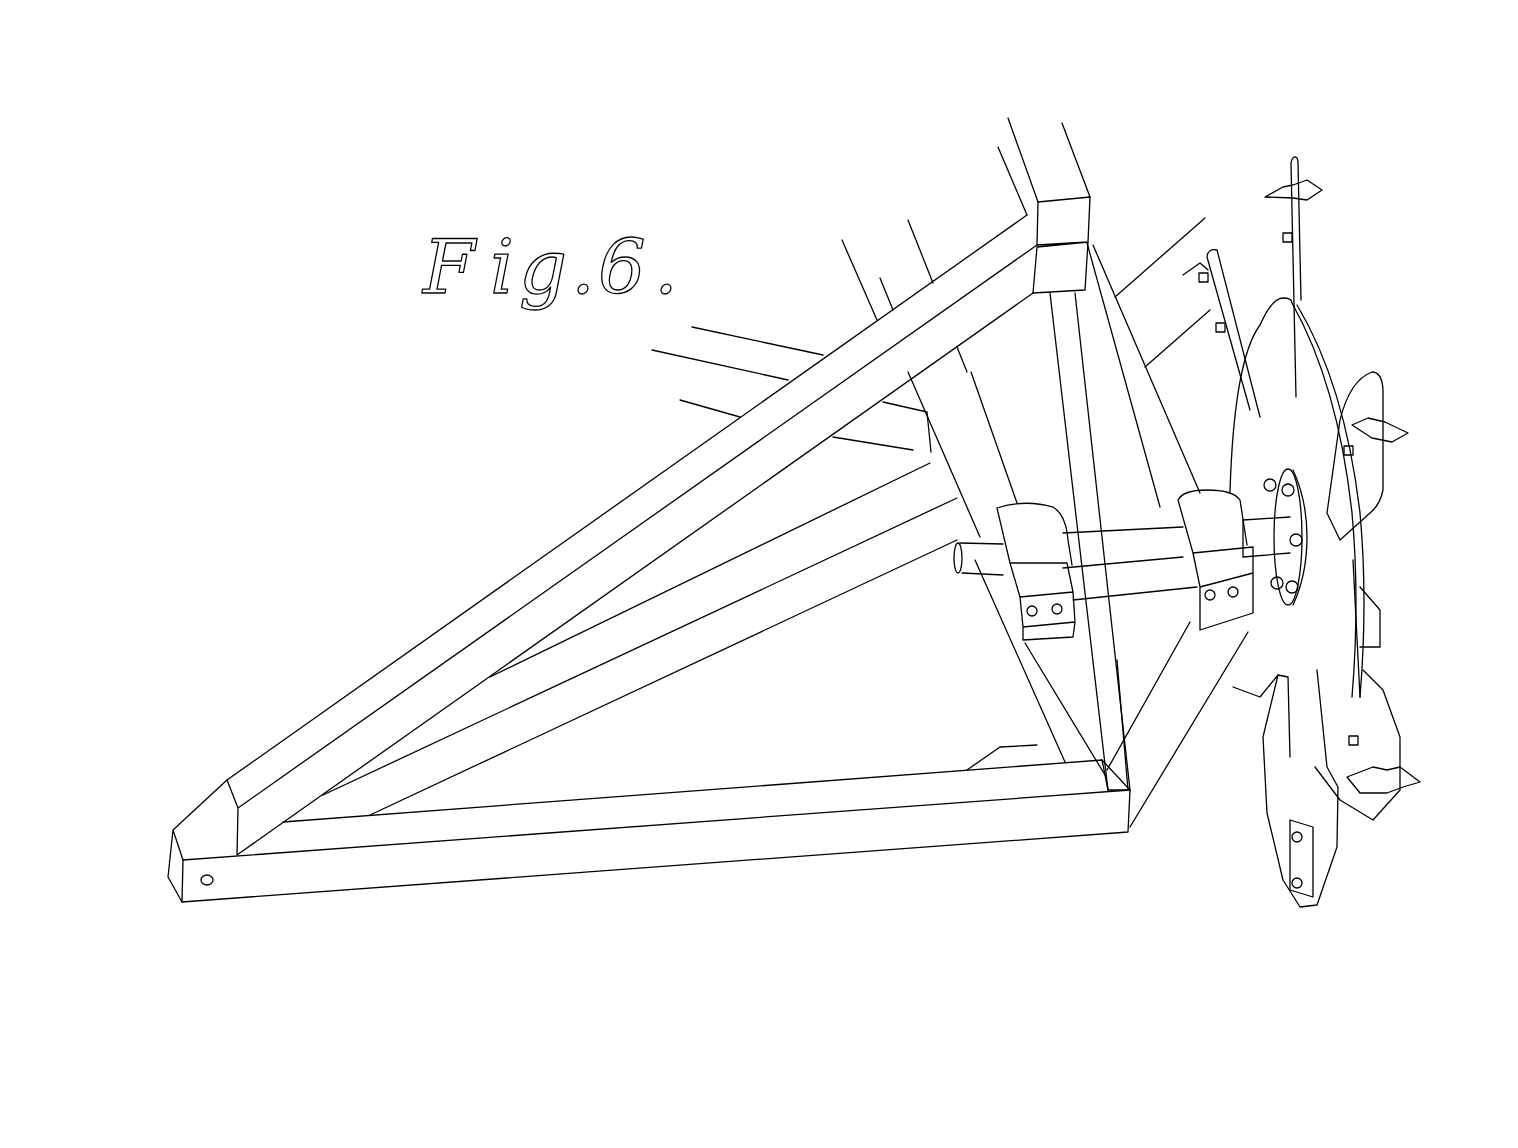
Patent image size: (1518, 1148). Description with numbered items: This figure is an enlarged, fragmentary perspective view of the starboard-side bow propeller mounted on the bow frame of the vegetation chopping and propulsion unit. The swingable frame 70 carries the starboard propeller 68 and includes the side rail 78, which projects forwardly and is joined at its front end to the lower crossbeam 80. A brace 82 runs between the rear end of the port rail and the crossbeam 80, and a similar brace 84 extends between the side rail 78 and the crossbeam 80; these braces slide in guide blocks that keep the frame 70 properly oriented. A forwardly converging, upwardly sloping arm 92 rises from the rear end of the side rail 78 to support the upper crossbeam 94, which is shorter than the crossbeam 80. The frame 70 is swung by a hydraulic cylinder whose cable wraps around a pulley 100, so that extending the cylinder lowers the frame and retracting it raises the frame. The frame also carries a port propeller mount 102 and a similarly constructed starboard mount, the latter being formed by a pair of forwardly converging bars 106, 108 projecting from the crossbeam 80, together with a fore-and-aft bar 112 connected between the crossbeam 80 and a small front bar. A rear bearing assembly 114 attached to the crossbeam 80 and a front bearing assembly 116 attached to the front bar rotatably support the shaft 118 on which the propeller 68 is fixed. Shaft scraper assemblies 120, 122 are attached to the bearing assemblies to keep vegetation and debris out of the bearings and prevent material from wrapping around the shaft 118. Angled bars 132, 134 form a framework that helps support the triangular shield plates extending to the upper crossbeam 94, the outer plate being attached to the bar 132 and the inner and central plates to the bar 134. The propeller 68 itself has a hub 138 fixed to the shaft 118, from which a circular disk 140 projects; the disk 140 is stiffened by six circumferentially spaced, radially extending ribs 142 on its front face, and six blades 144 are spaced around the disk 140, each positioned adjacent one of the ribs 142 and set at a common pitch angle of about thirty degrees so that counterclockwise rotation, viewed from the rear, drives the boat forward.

The starboard propeller 68 is at (1378, 385).
The swingable frame 70 is at (252, 777).
The side rail 78 is at (973, 827).
The crossbeam 80 is at (1040, 715).
The brace 82 is at (710, 390).
The brace 84 is at (677, 647).
The arm 92 is at (520, 593).
The upper crossbeam 94 is at (1048, 160).
The pulley 100 is at (1137, 276).
The port propeller mount 102 is at (1140, 813).
The converging bar 106 is at (1160, 778).
The converging bar 108 is at (1117, 470).
The fore-and-aft bar 112 is at (1182, 750).
The rear bearing assembly 114 is at (1017, 503).
The front bearing assembly 116 is at (1218, 503).
The shaft 118 is at (958, 566).
The shaft scraper assembly 120 is at (1017, 580).
The shaft scraper assembly 122 is at (1192, 566).
The angled bar 132 is at (1115, 772).
The angled bar 134 is at (1145, 402).
The hub 138 is at (1307, 573).
The circular disk 140 is at (1357, 568).
The rib 142 is at (1372, 628).
The blade 144 is at (1213, 250).